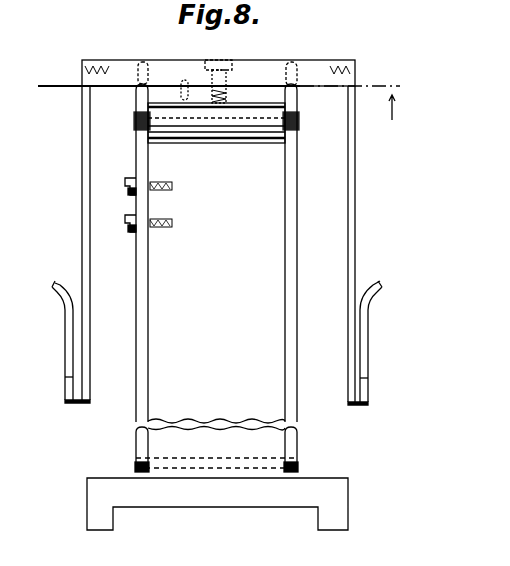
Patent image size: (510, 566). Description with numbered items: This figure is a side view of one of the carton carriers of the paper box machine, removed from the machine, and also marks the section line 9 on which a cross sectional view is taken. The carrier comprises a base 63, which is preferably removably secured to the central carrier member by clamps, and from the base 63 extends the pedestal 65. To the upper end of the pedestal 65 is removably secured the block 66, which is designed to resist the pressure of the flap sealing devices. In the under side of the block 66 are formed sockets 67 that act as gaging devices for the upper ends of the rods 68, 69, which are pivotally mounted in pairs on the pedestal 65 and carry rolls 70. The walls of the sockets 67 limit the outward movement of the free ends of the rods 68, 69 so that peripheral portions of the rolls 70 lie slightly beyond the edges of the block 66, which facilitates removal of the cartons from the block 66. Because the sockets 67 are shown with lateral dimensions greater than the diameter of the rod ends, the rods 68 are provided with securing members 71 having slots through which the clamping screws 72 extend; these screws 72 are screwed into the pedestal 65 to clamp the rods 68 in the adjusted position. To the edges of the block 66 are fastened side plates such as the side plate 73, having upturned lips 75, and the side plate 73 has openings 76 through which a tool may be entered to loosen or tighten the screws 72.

The section line 9— 9 is at (220, 99).
The base 63 is at (218, 507).
The pedestal 65 is at (270, 394).
The block 66 is at (318, 62).
The sockets 67 is at (288, 62).
The rods 68 is at (137, 394).
The rods 69 is at (297, 370).
The rolls 70 is at (207, 143).
The securing members 71 is at (356, 168).
The clamping screws 72 is at (126, 178).
The side plate 73 is at (83, 124).
The upturned lips 75 is at (65, 352).
The openings 76 is at (82, 238).